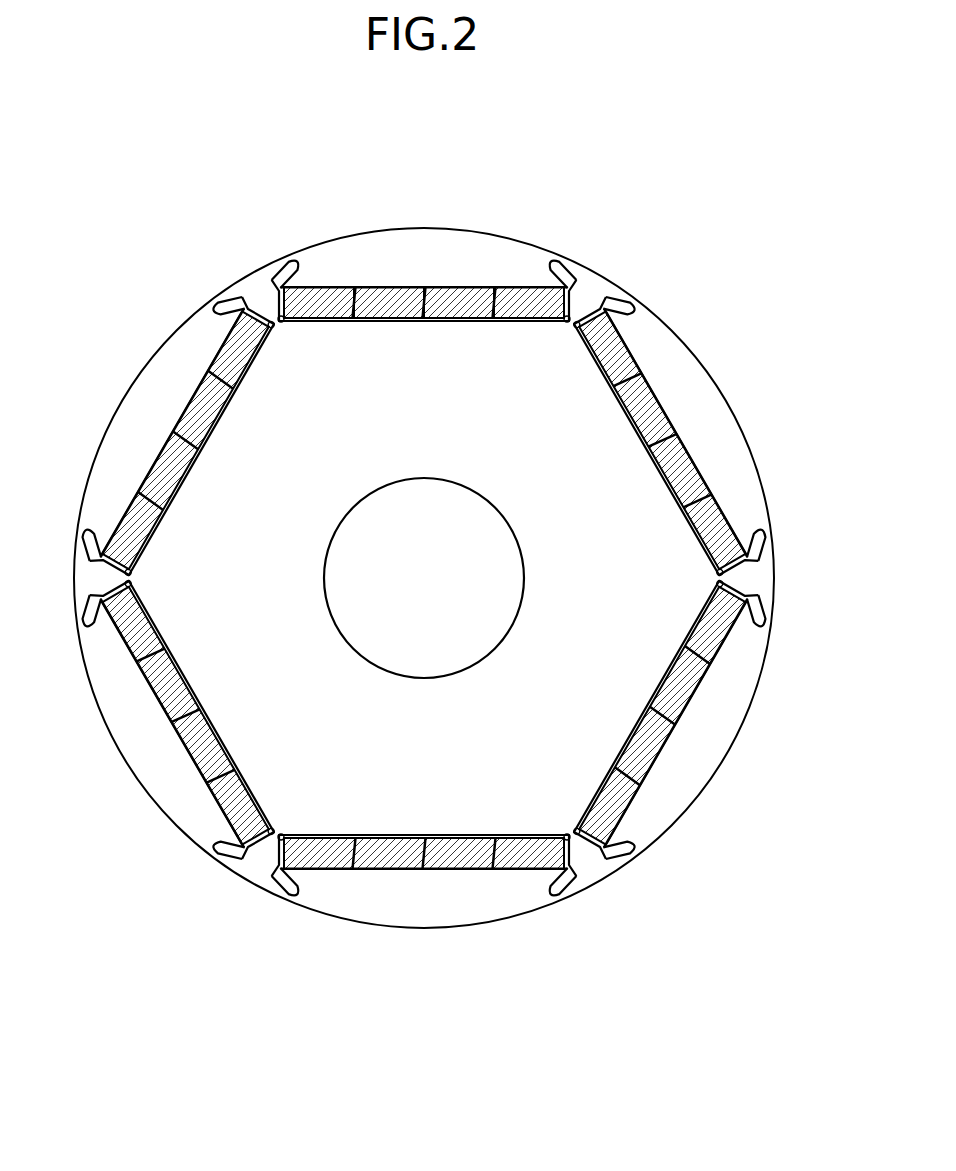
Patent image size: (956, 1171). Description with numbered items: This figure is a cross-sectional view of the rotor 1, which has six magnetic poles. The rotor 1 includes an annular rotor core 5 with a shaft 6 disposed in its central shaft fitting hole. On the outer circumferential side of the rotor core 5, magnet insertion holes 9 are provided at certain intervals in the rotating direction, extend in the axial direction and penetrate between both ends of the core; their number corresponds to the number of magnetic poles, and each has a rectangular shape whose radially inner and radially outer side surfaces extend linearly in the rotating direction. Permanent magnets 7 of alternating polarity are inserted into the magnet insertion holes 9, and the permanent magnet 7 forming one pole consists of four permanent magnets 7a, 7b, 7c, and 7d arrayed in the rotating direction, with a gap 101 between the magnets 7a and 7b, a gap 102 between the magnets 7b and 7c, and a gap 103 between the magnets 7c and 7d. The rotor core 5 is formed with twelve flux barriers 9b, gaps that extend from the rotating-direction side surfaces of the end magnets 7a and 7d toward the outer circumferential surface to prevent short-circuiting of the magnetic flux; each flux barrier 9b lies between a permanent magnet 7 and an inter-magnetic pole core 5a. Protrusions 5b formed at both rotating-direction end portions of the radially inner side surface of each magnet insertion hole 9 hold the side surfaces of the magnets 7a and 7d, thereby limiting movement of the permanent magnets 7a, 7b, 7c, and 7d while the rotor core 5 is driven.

The rotor 1 is at (645, 140).
The rotor core 5 is at (718, 386).
The inter-magnetic pole core 5a is at (256, 287).
The protrusion 5b is at (273, 318).
The shaft 6 is at (423, 578).
The permanent magnet 7 is at (425, 562).
The permanent magnet 7a is at (318, 321).
The permanent magnet 7b is at (388, 321).
The permanent magnet 7c is at (457, 321).
The permanent magnet 7d is at (527, 321).
The magnet insertion hole 9 is at (461, 287).
The flux barrier 9b is at (273, 280).
The gap 101 is at (358, 287).
The gap 102 is at (426, 287).
The gap 103 is at (499, 287).